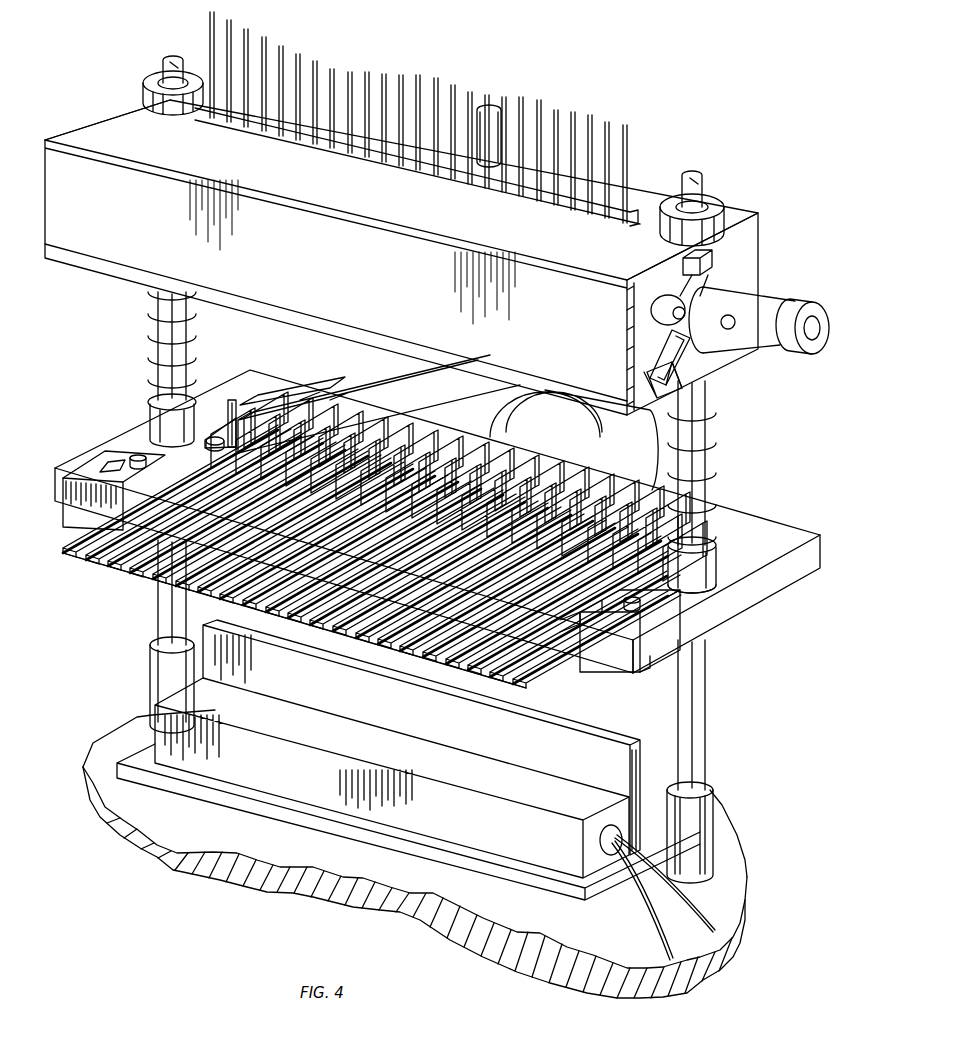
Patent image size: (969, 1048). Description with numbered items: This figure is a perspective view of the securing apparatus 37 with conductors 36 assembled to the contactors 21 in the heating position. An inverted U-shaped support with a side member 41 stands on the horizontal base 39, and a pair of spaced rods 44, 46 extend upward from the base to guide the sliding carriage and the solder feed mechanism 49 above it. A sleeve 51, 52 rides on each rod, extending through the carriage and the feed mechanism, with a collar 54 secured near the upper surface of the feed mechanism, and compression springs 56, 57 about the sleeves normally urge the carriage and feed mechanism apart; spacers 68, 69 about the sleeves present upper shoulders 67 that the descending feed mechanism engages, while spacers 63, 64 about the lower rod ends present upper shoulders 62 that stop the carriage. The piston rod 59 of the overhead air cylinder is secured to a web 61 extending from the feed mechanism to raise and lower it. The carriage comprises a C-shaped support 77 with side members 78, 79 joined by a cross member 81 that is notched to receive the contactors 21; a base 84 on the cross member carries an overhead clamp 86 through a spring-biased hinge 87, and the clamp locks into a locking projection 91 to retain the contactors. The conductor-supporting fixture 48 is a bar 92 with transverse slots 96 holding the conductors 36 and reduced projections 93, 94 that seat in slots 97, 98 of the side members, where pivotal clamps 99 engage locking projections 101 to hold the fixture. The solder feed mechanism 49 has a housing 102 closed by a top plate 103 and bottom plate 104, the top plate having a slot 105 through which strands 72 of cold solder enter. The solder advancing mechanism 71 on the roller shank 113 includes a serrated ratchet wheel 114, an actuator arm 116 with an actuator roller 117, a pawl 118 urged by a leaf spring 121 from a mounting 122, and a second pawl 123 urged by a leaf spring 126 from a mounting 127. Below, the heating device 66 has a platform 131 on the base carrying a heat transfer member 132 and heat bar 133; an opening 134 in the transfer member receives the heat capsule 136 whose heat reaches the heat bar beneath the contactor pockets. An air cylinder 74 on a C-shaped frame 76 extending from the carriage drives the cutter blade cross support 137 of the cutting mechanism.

The contactors 21 is at (498, 480).
The conductors 36 is at (480, 666).
The securing apparatus 37 is at (660, 158).
The horizontal base 39 is at (622, 964).
The side member 41 is at (750, 622).
The rod 44 is at (700, 188).
The rod 46 is at (179, 63).
The conductor-supporting fixture 48 is at (546, 676).
The solder feed mechanism 49 is at (98, 75).
The sleeve 51 is at (705, 204).
The sleeve 52 is at (163, 66).
The collar 54 is at (148, 76).
The compression spring 56 is at (706, 442).
The compression spring 57 is at (154, 342).
The piston rod 59 is at (492, 110).
The web 61 is at (602, 166).
The upper shoulder 62 is at (154, 642).
The spacer 63 is at (704, 826).
The spacer 64 is at (154, 668).
The heating device 66 is at (304, 852).
The upper shoulder 67 is at (152, 392).
The spacer 68 is at (708, 557).
The spacer 69 is at (150, 419).
The solder advancing mechanism 71 is at (780, 279).
The strands of cold solder 72 is at (284, 36).
The air cylinder 74 is at (622, 444).
The C-shaped frame 76 is at (766, 522).
The C-shaped support 77 is at (664, 669).
The side member 78 is at (716, 622).
The side member 79 is at (140, 442).
The cross member 81 is at (202, 428).
The base 84 is at (226, 412).
The overhead clamp 86 is at (376, 388).
The spring-biased hinge 87 is at (246, 408).
The locking projection 91 is at (692, 575).
The bar 92 is at (526, 648).
The reduced projection 93 is at (656, 634).
The reduced projection 94 is at (82, 470).
The transverse slots 96 is at (564, 626).
The slot 97 is at (642, 678).
The slot 98 is at (72, 481).
The pivotal clamps 99 is at (126, 460).
The locking projections 101 is at (110, 500).
The housing 102 is at (52, 153).
The top plate 103 is at (107, 110).
The bottom plate 104 is at (93, 266).
The slot 105 is at (604, 204).
The shank 113 is at (728, 330).
The serrated ratchet wheel 114 is at (668, 332).
The actuator arm 116 is at (762, 342).
The actuator roller 117 is at (804, 304).
The pawl 118 is at (660, 352).
The leaf spring 121 is at (658, 368).
The mounting 122 is at (682, 388).
The second pawl 123 is at (652, 310).
The leaf spring 126 is at (687, 282).
The mounting 127 is at (716, 266).
The platform 131 is at (538, 870).
The heat transfer member 132 is at (407, 826).
The heat bar 133 is at (604, 744).
The opening 134 is at (608, 824).
The heat capsule 136 is at (616, 885).
The cutter blade cross support 137 is at (440, 456).